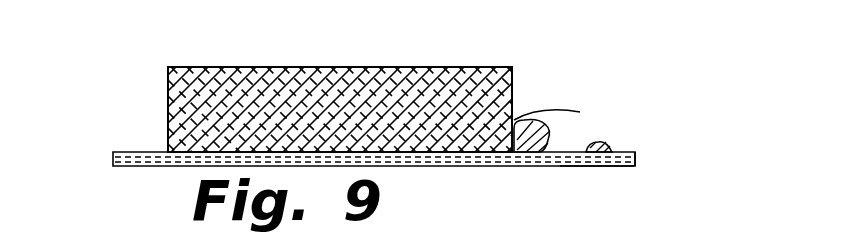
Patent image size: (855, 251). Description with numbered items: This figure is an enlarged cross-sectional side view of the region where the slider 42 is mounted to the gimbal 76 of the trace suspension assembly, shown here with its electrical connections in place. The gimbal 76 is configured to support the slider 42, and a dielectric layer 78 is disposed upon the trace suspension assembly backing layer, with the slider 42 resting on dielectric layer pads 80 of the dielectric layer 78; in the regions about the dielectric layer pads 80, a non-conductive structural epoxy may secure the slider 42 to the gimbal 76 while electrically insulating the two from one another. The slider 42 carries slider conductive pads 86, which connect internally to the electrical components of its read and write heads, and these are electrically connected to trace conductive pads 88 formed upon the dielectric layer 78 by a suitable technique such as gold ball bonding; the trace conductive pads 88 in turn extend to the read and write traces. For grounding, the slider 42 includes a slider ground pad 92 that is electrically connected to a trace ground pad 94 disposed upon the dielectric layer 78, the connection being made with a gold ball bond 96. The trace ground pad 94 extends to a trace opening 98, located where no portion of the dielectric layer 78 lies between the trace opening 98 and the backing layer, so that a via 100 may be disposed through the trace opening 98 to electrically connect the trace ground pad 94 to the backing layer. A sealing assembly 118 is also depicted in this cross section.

The sealing assembly 118 is at (128, 81).
The slider 42 is at (260, 66).
The dielectric layer pads 80 is at (168, 148).
The gimbal 76 is at (138, 153).
The slider conductive pads 86 is at (518, 108).
The slider ground pad 92 is at (517, 108).
The gold ball bond 96 is at (547, 123).
The trace ground pad 94 is at (565, 152).
The trace conductive pads 88 is at (577, 147).
The trace opening 98 is at (610, 145).
The dielectric layer 78 is at (636, 156).
The via 100 is at (598, 167).